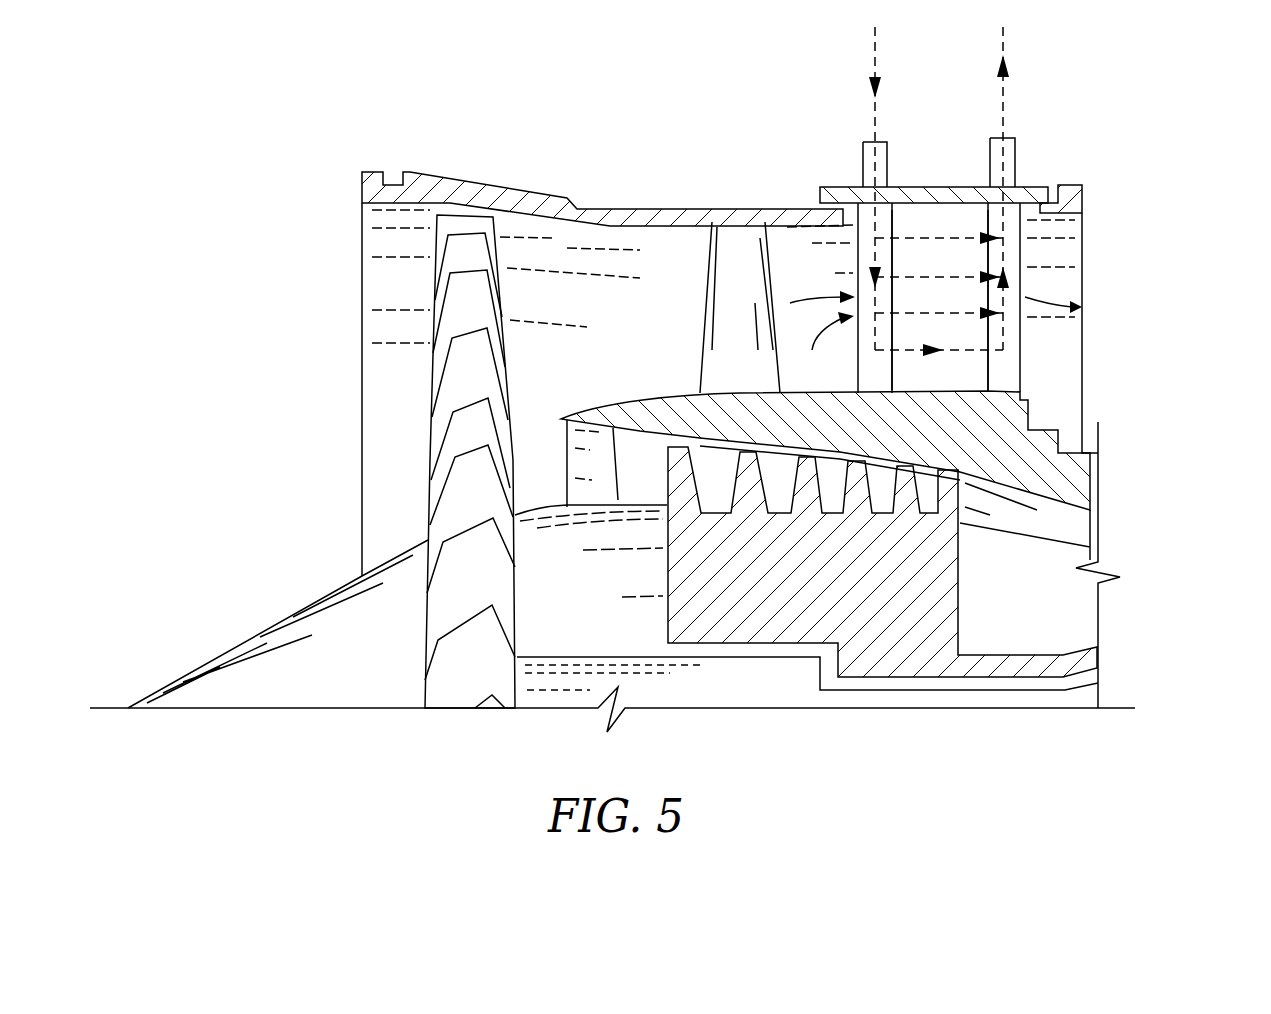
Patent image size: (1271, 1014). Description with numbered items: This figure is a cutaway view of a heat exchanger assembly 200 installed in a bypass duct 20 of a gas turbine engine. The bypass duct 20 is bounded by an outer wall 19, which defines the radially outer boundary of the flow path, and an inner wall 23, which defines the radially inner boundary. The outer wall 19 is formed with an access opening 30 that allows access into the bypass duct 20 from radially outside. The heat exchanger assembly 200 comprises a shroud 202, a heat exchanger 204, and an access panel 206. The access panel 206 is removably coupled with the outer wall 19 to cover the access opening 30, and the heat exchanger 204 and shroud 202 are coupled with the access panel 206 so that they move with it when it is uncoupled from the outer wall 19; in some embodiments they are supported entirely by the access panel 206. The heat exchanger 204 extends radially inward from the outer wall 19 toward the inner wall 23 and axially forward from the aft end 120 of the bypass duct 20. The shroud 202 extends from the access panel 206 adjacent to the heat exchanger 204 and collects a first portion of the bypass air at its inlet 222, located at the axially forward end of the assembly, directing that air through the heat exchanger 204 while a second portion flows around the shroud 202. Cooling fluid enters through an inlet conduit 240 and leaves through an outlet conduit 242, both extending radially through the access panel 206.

The outer wall 19 is at (668, 212).
The bypass duct 20 is at (574, 306).
The inner wall 23 is at (647, 403).
The access opening 30 is at (955, 220).
The aft end 120 is at (1095, 316).
The heat exchanger assembly 200 is at (1035, 190).
The shroud 202 is at (970, 380).
The heat exchanger 204 is at (1010, 257).
The access panel 206 is at (907, 188).
The inlet 222 is at (819, 340).
The inlet conduit 240 is at (887, 148).
The outlet conduit 242 is at (1010, 150).